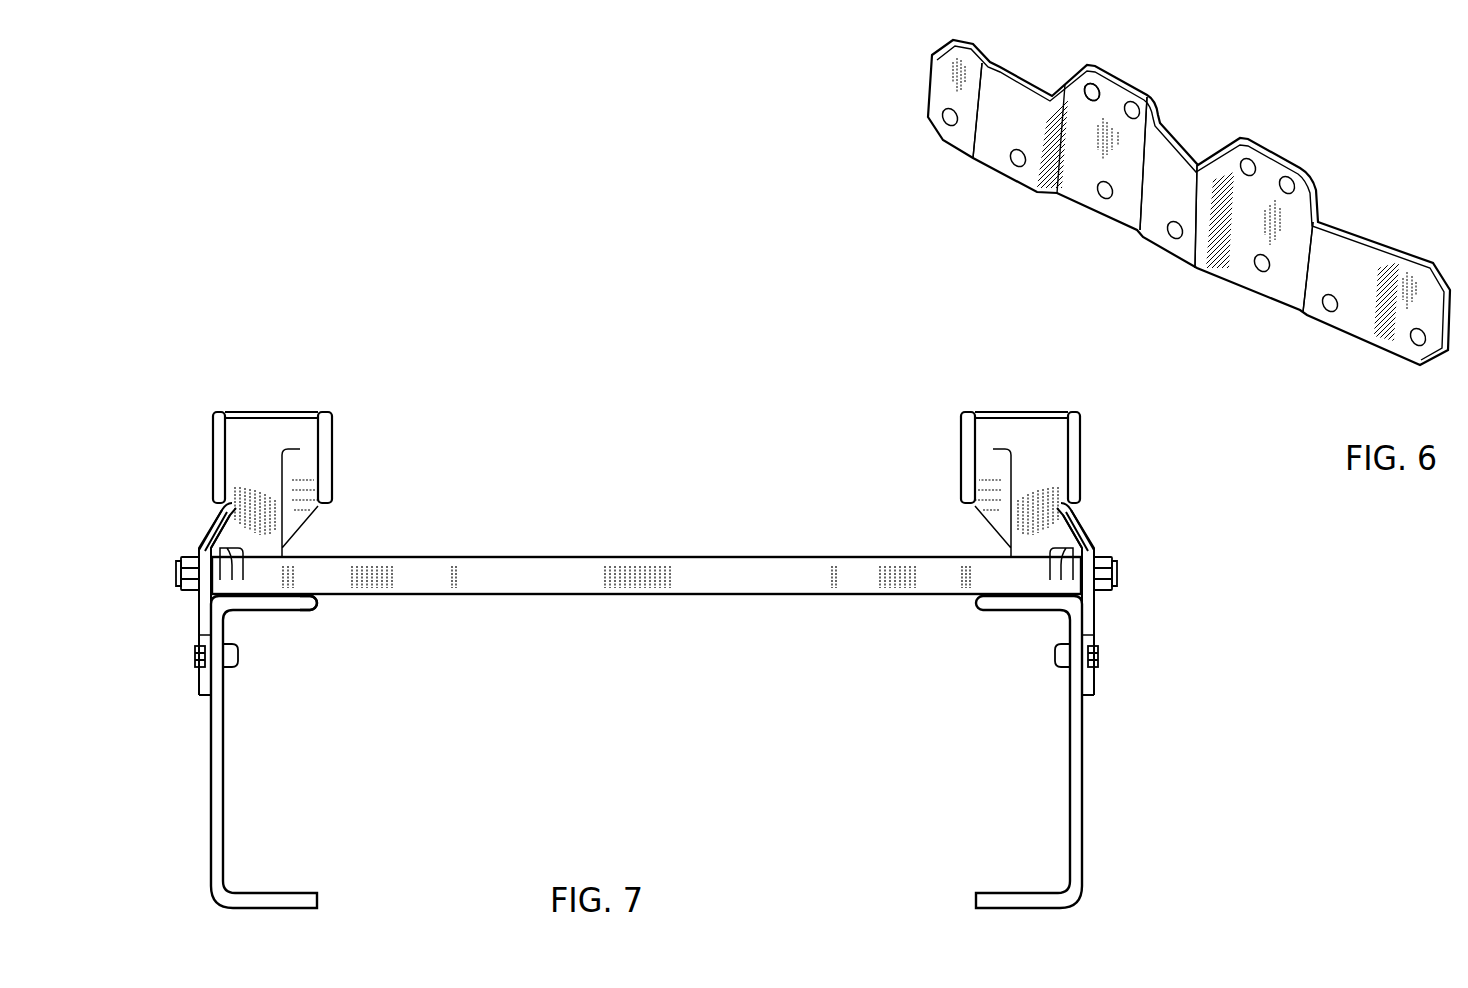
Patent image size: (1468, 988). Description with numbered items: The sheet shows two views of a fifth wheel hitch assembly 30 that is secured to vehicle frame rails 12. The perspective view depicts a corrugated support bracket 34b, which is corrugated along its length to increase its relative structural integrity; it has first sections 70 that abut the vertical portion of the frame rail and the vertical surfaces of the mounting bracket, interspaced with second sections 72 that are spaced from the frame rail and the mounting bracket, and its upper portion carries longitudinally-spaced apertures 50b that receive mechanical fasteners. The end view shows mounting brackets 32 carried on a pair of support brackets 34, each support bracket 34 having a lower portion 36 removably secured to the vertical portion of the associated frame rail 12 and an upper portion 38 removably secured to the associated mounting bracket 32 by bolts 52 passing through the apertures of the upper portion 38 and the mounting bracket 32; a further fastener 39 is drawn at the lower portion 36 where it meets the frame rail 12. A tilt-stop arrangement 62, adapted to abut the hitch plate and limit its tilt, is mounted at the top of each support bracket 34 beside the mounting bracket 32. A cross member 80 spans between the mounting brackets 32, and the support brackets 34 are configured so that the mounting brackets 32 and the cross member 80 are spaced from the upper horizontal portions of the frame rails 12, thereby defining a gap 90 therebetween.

In FIG. 7, the vehicle frame rail 12 is at (210, 770).
In FIG. 7, the fifth wheel hitch assembly 30 is at (619, 604).
In FIG. 7, the mounting bracket 32 is at (301, 411).
In FIG. 7, the support bracket 34 is at (201, 634).
In FIG. 6, the support bracket 34b is at (1284, 115).
In FIG. 7, the lower portion 36 is at (205, 668).
In FIG. 7, the upper portion 38 is at (198, 590).
In FIG. 7, the fastener 39 is at (196, 658).
In FIG. 6, the aperture 50b is at (1074, 90).
In FIG. 7, the bolt 52 is at (178, 562).
In FIG. 7, the tilt-stop arrangement 62 is at (208, 522).
In FIG. 6, the first section 70 is at (1247, 237).
In FIG. 6, the second section 72 is at (997, 145).
In FIG. 7, the cross member 80 is at (594, 556).
In FIG. 7, the gap 90 is at (319, 598).